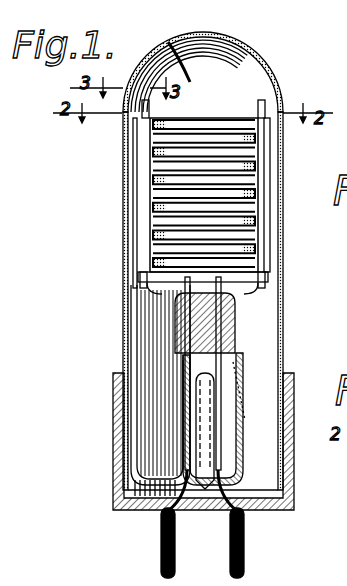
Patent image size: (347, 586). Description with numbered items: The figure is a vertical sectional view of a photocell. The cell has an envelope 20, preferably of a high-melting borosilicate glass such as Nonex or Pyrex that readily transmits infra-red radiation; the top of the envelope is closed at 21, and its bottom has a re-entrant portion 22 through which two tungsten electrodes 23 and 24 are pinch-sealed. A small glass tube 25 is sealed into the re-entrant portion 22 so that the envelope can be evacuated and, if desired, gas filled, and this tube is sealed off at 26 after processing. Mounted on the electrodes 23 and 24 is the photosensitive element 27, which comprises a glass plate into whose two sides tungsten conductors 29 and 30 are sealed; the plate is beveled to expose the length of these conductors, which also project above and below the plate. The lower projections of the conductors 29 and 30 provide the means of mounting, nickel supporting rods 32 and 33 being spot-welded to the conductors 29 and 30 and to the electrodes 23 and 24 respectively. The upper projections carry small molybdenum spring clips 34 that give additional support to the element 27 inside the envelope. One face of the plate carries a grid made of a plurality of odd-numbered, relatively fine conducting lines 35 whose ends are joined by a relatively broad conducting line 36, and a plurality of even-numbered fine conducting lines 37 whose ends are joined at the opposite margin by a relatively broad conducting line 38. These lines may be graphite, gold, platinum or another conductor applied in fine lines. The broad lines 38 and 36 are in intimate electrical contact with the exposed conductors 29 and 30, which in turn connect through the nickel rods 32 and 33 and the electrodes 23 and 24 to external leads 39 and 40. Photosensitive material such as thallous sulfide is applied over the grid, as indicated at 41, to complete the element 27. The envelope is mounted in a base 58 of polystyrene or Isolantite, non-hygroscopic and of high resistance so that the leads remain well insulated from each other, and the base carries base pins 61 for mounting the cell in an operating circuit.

The envelope 20 is at (281, 250).
The closed top of envelope 21 is at (246, 42).
The re-entrant portion 22 is at (165, 432).
The electrode 23 is at (186, 324).
The electrode 24 is at (234, 320).
The glass tube 25 is at (192, 390).
The seal-off point 26 is at (228, 472).
The photosensitive element 27 is at (232, 112).
The tungsten conductor 29 is at (146, 275).
The tungsten conductor 30 is at (268, 290).
The nickel supporting rod 32 is at (150, 297).
The nickel supporting rod 33 is at (268, 292).
The spring clips 34 is at (262, 100).
The odd numbered conducting lines 35 is at (221, 122).
The broad conducting line 36 is at (262, 158).
The even numbered conducting lines 37 is at (184, 150).
The broad conducting line 38 is at (138, 210).
The external lead 39 is at (190, 412).
The external lead 40 is at (215, 452).
The photo-sensitive material 41 is at (152, 178).
The base 58 is at (294, 497).
The base pins 61 is at (230, 553).